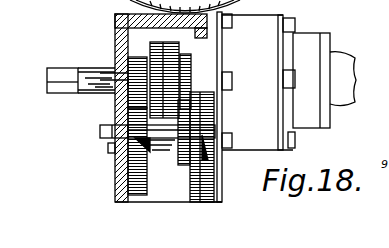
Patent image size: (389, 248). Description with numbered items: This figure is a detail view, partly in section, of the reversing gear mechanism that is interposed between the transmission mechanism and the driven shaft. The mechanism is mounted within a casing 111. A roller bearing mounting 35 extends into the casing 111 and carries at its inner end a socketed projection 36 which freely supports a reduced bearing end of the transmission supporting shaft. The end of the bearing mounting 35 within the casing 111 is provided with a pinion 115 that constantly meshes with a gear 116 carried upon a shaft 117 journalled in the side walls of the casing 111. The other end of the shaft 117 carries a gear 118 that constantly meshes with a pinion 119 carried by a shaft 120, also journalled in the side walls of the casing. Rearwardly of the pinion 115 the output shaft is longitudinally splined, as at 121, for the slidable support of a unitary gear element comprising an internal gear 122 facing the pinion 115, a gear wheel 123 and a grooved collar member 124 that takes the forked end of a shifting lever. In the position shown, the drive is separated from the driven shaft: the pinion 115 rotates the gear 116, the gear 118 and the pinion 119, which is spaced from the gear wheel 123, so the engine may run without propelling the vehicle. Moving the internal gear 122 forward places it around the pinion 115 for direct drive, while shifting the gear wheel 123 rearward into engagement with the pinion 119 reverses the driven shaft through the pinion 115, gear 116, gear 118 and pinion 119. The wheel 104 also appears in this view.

The wheel 104 is at (145, 6).
The casing 111 is at (115, 30).
The socketed projection 36 is at (86, 73).
The roller bearing mounting 35 is at (102, 101).
The pinion 115 is at (124, 72).
The internal gear 122 is at (150, 47).
The gear wheel 123 is at (190, 75).
The gear 116 is at (128, 184).
The shaft 117 is at (163, 148).
The shaft 120 is at (186, 158).
The pinion 119 is at (193, 160).
The grooved collar member 124 is at (198, 58).
The splined portion 121 is at (205, 80).
The gear 118 is at (213, 186).